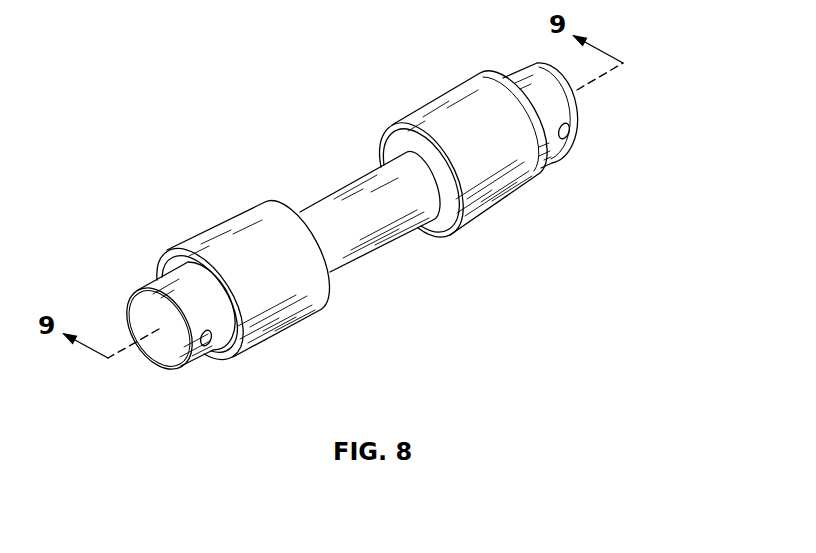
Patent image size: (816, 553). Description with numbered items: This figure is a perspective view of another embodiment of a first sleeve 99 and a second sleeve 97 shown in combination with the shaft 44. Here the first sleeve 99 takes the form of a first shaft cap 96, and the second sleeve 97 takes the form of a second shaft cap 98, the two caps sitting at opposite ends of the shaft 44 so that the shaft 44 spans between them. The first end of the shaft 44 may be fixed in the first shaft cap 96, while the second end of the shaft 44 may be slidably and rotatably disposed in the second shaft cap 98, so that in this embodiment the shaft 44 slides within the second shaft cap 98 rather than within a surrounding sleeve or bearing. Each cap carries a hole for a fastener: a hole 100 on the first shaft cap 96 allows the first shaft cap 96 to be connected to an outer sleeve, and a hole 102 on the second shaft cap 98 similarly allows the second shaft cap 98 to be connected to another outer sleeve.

The shaft 44 is at (375, 243).
The first shaft cap 96 is at (483, 215).
The second sleeve 97 is at (263, 338).
The second shaft cap 98 is at (297, 323).
The first sleeve 99 is at (525, 188).
The hole 100 is at (569, 139).
The hole 102 is at (208, 345).